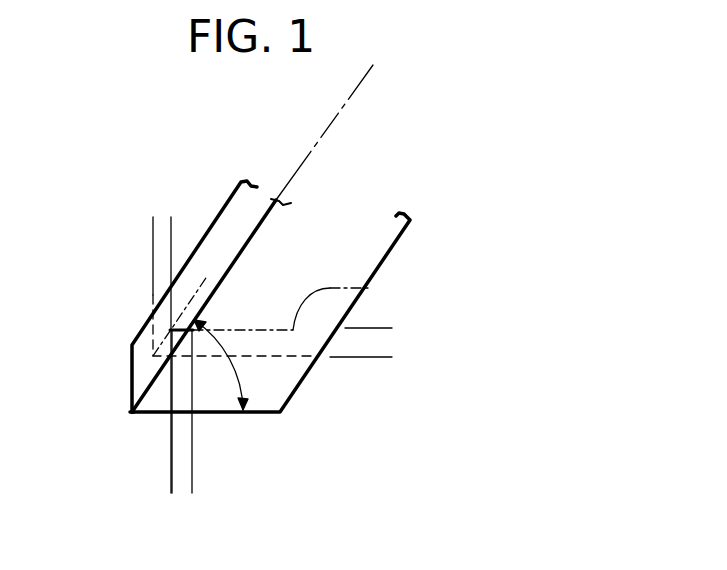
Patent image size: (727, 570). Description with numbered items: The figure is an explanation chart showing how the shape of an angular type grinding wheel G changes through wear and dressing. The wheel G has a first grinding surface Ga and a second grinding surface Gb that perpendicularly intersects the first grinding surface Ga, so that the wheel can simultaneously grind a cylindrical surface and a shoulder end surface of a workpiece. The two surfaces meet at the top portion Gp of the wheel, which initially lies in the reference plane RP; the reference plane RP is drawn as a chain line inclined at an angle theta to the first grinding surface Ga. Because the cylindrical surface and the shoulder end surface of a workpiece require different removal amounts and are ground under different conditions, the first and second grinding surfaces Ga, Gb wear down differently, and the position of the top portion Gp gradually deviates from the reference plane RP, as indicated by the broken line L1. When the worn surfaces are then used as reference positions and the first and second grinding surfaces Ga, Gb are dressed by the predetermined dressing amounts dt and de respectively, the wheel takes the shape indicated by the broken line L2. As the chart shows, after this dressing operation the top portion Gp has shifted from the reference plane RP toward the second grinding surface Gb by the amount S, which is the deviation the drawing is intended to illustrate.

The angular type grinding wheel G is at (257, 334).
The first grinding surface Ga is at (272, 413).
The second grinding surface Gb is at (130, 373).
The top portion Gp is at (132, 413).
The reference plane RP is at (350, 102).
The broken line L1 is at (280, 358).
The broken line L2 is at (370, 288).
The dressing amount de is at (389, 302).
The dressing amount dt is at (181, 218).
The deviation amount S is at (202, 480).